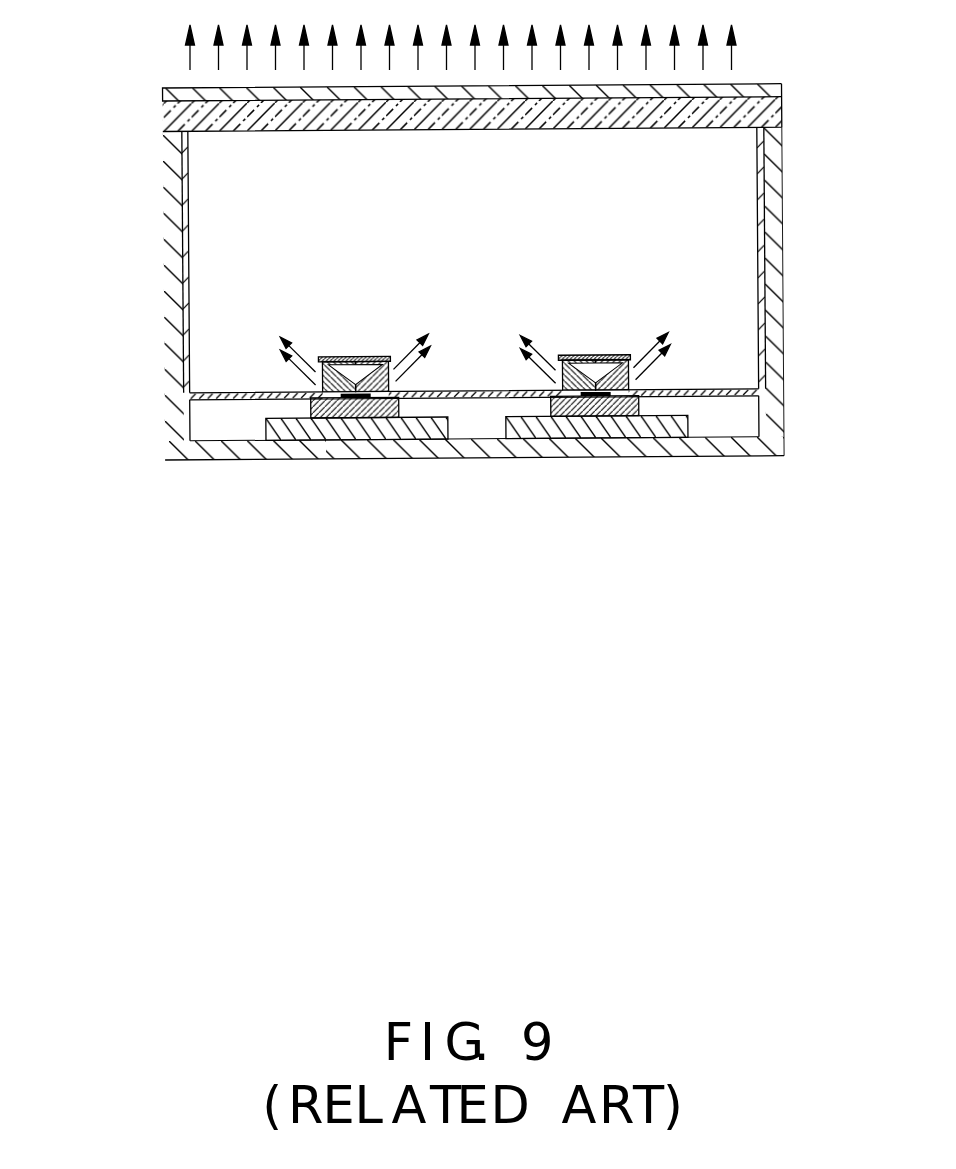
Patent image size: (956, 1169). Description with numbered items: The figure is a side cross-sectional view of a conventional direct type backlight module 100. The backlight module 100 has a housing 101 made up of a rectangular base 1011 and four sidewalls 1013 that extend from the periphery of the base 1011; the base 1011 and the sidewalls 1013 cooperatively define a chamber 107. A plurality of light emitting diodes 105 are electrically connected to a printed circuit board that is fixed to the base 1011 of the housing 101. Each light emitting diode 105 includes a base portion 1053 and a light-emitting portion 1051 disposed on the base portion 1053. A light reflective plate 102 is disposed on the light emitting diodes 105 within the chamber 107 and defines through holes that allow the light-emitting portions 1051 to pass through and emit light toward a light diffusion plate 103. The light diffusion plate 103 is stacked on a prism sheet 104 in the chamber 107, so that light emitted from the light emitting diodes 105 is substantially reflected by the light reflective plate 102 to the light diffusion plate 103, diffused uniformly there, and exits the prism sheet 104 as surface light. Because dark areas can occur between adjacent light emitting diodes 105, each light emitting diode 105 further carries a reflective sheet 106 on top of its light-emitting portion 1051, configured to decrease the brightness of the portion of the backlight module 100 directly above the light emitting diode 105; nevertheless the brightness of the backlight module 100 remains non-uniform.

The backlight module 100 is at (143, 57).
The housing 101 is at (82, 330).
The base 1011 is at (217, 450).
The sidewalls 1013 is at (175, 340).
The light reflective plate 102 is at (690, 392).
The light diffusion plate 103 is at (770, 112).
The prism sheet 104 is at (748, 92).
The light emitting diode 105 is at (377, 530).
The light-emitting portion 1051 is at (322, 386).
The base portion 1053 is at (345, 402).
The reflective sheet 106 is at (342, 358).
The chamber 107 is at (743, 183).